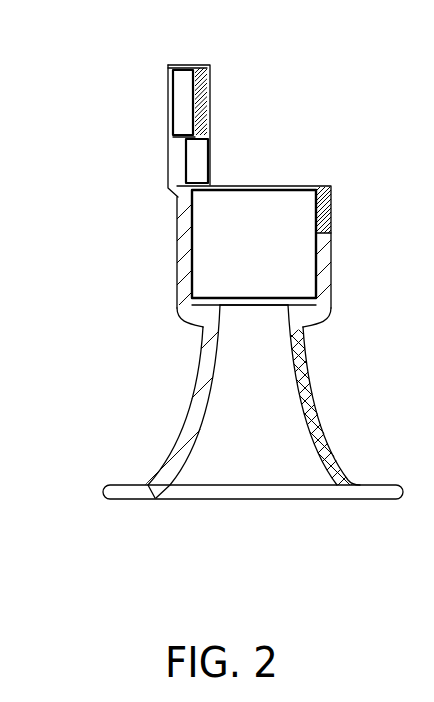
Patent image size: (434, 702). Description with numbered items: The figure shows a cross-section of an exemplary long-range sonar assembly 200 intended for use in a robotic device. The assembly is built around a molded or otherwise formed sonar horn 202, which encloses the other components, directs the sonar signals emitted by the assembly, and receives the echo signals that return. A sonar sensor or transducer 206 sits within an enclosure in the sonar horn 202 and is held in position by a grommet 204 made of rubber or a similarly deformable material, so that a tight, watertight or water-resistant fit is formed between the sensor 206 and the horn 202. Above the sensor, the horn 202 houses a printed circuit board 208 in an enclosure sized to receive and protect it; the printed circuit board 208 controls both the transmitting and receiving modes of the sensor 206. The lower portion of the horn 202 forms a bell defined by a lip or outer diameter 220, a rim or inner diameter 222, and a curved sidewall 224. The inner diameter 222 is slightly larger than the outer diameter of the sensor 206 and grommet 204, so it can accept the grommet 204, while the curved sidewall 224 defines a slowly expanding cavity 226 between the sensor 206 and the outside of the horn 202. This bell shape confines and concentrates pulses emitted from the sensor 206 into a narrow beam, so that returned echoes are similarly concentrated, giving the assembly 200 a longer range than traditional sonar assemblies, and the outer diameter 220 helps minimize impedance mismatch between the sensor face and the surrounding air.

The long-range sonar assembly 200 is at (78, 88).
The sonar horn 202 is at (137, 492).
The grommet 204 is at (290, 222).
The sonar sensor or transducer 206 is at (255, 303).
The printed circuit board 208 is at (217, 105).
The lip or outer diameter 220 is at (200, 503).
The rim or inner diameter 222 is at (240, 335).
The curved sidewall 224 is at (309, 421).
The slowly expanding cavity 226 is at (253, 432).